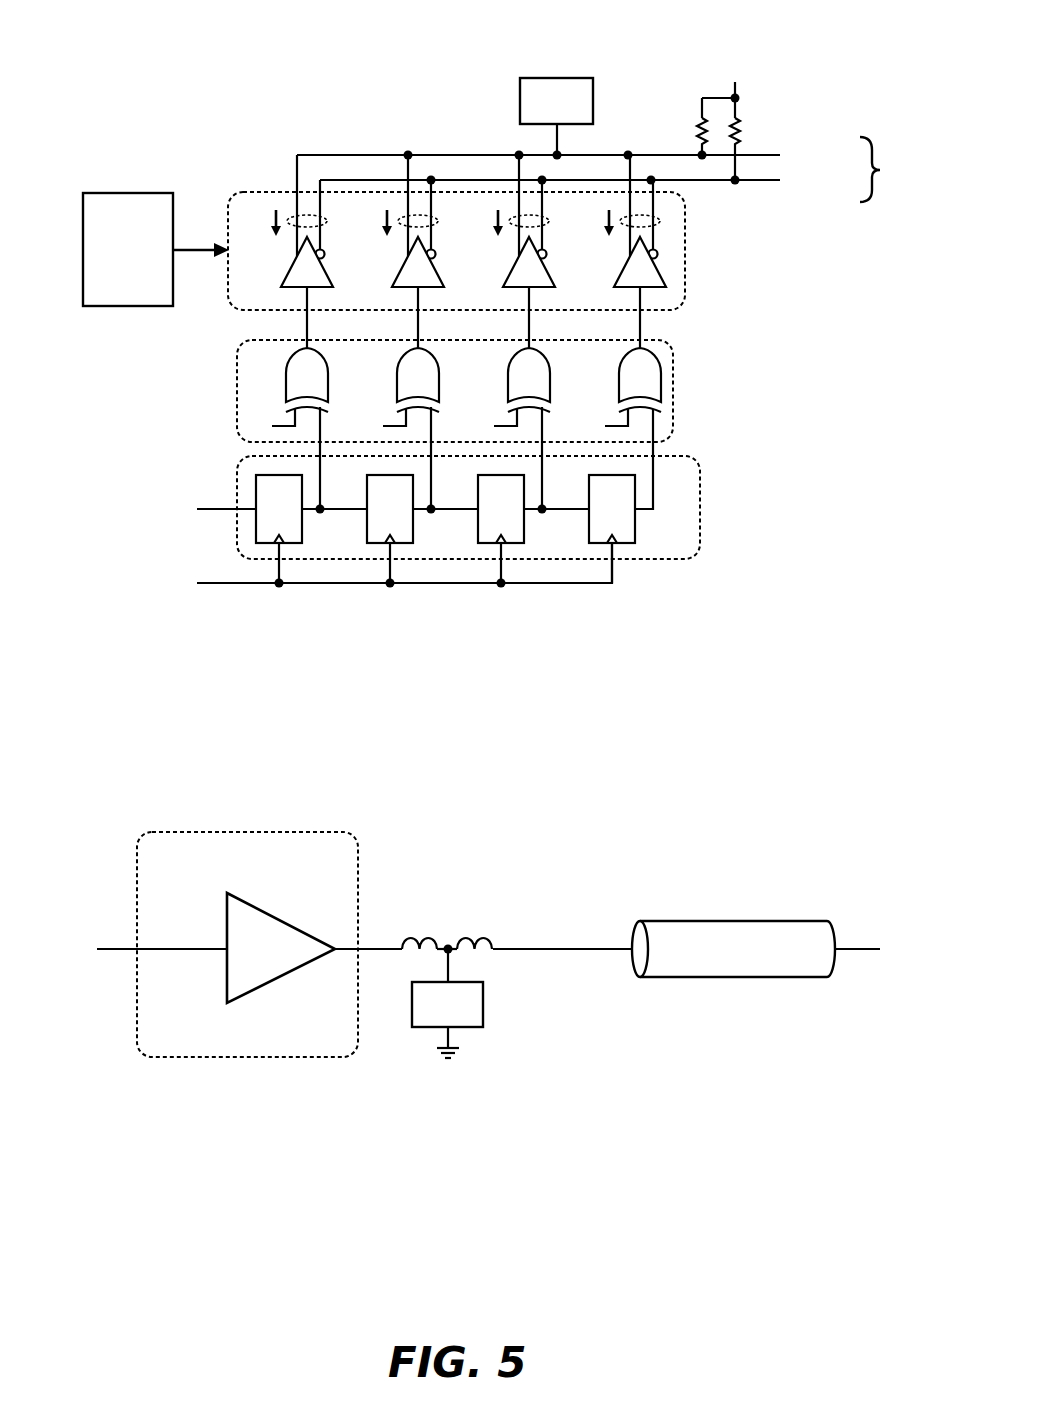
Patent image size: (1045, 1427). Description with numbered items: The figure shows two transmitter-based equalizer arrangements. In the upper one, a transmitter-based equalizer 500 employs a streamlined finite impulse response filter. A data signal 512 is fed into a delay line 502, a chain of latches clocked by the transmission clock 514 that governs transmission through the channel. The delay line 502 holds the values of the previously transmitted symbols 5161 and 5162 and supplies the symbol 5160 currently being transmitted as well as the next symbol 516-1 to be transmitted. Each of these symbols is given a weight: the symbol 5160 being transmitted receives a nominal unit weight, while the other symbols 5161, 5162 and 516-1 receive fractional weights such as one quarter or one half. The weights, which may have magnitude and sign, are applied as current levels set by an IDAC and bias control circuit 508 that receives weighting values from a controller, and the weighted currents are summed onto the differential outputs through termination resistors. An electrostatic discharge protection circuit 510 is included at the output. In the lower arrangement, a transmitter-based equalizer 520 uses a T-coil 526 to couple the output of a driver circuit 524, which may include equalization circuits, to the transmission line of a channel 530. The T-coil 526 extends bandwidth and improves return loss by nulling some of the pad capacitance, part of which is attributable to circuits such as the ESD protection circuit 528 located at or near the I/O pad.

The transmitter-based equalizer 500 is at (120, 43).
The delay line 502 is at (700, 544).
The IDAC & bias control circuit 508 is at (110, 192).
The electrostatic discharge protection circuit 510 is at (520, 97).
The data signal 512 is at (217, 508).
The transmission clock 514 is at (340, 585).
The next symbol to be transmitted 516-1 is at (307, 326).
The symbol being transmitted 5160 is at (418, 326).
The previously transmitted symbol 5161 is at (529, 326).
The previously transmitted symbol 5162 is at (640, 326).
The transmitter-based equalizer 520 is at (124, 758).
The driver circuit 524 is at (227, 903).
The T-coil 526 is at (479, 912).
The ESD protection circuit 528 is at (483, 1013).
The channel 530 is at (683, 920).